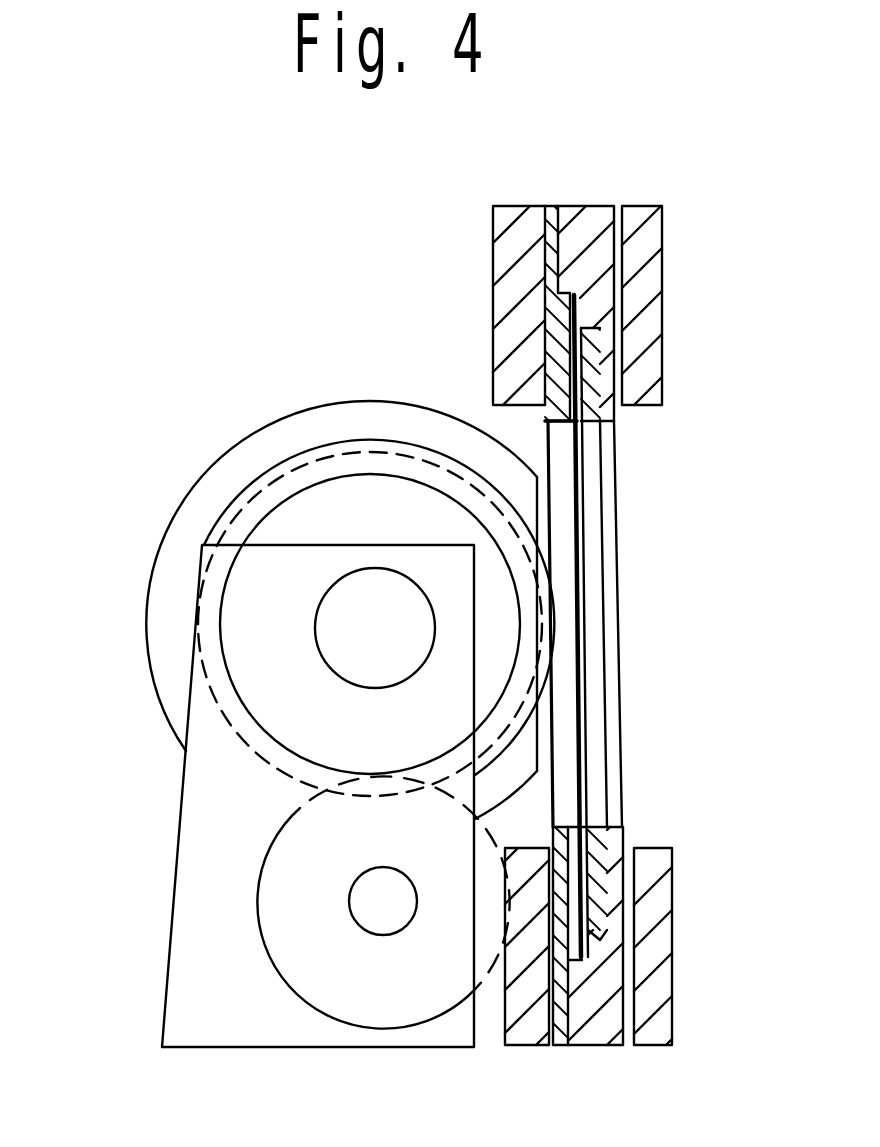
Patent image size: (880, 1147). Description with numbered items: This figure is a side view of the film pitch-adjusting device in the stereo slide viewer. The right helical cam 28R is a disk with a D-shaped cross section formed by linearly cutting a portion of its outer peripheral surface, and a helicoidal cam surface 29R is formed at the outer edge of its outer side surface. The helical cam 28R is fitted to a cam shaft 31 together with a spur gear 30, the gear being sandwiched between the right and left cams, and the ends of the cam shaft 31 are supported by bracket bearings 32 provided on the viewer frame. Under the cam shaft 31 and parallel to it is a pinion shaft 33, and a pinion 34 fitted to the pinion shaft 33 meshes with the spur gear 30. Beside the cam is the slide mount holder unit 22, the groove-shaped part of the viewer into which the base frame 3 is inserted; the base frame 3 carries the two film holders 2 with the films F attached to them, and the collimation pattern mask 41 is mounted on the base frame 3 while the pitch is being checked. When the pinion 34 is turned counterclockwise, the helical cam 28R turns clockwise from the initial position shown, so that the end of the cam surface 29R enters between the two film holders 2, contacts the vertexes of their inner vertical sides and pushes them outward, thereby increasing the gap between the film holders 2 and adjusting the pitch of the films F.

The slide mount holder unit 22 is at (500, 222).
The collimation pattern mask 41 is at (543, 447).
The base frame 3 is at (618, 477).
The film holder 2 is at (593, 702).
The film F is at (587, 755).
The right helical cam 28R is at (238, 447).
The right helicoidal cam surface 29R is at (170, 544).
The spur gear 30 is at (218, 677).
The cam shaft 31 is at (340, 613).
The bracket bearing 32 is at (213, 818).
The pinion shaft 33 is at (380, 917).
The pinion 34 is at (262, 892).